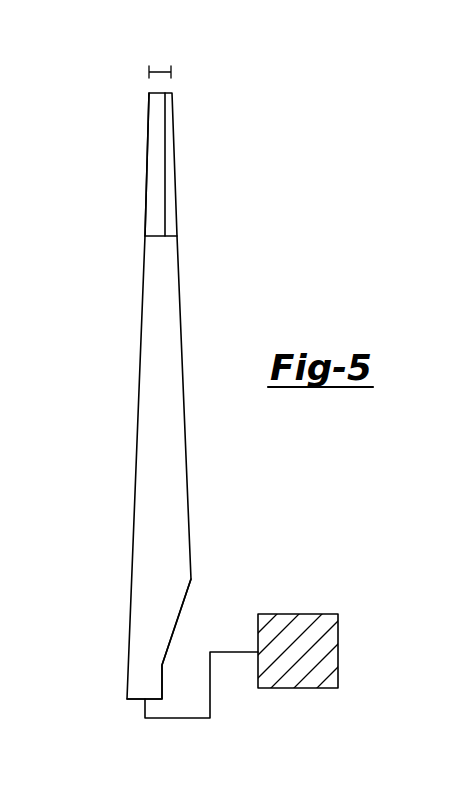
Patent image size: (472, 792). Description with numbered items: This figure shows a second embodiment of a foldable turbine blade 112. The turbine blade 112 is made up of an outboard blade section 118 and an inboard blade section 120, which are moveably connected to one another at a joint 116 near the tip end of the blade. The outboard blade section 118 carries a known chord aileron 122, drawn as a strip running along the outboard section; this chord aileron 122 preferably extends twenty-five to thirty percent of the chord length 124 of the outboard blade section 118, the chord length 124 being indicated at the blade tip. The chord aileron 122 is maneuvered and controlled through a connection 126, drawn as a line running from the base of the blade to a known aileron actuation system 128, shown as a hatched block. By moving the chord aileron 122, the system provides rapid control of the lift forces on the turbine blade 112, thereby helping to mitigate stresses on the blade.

The turbine blade 112 is at (233, 463).
The joint 116 is at (147, 161).
The outboard blade section 118 is at (147, 158).
The inboard blade section 120 is at (132, 563).
The chord aileron 122 is at (177, 196).
The chord length 124 is at (163, 71).
The connection 126 is at (229, 651).
The aileron actuation system 128 is at (338, 632).